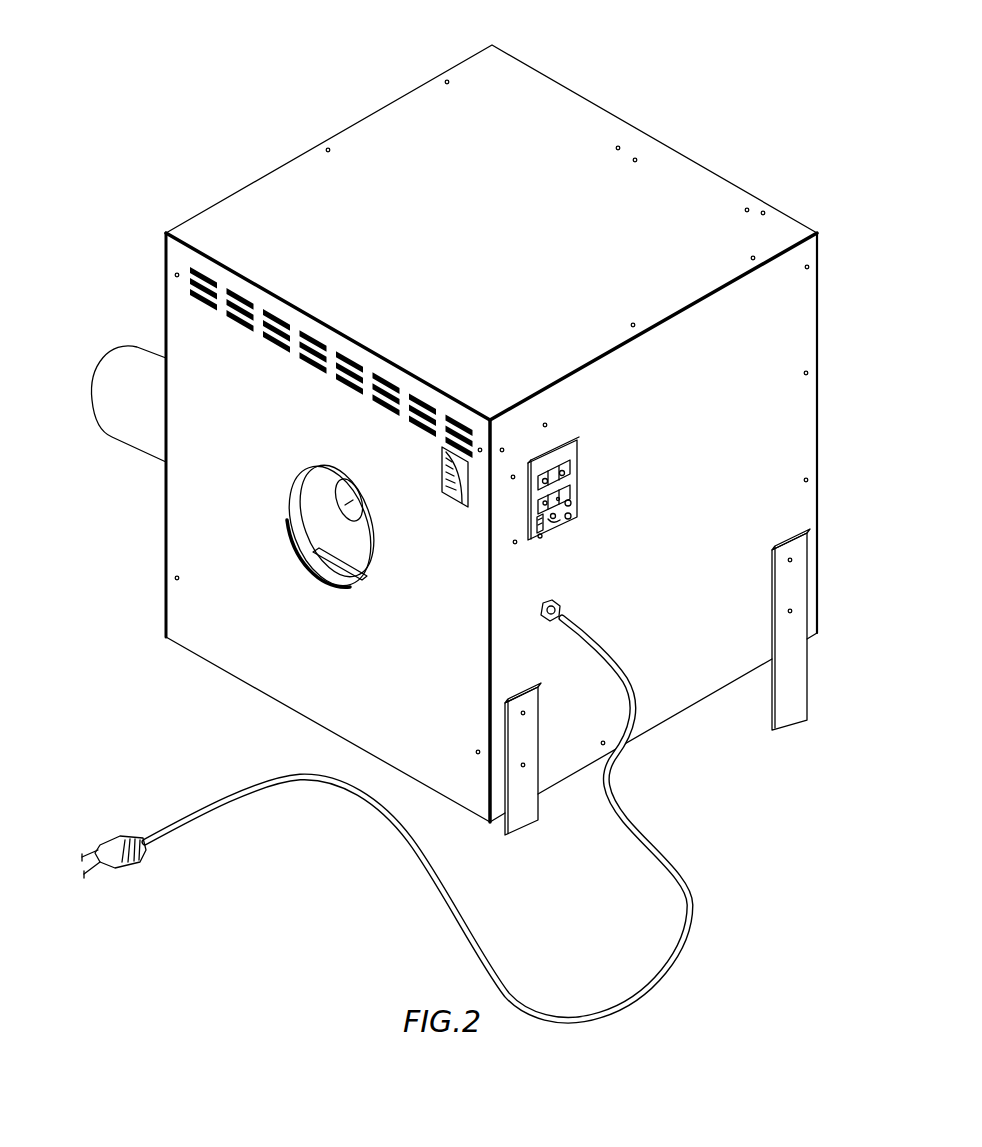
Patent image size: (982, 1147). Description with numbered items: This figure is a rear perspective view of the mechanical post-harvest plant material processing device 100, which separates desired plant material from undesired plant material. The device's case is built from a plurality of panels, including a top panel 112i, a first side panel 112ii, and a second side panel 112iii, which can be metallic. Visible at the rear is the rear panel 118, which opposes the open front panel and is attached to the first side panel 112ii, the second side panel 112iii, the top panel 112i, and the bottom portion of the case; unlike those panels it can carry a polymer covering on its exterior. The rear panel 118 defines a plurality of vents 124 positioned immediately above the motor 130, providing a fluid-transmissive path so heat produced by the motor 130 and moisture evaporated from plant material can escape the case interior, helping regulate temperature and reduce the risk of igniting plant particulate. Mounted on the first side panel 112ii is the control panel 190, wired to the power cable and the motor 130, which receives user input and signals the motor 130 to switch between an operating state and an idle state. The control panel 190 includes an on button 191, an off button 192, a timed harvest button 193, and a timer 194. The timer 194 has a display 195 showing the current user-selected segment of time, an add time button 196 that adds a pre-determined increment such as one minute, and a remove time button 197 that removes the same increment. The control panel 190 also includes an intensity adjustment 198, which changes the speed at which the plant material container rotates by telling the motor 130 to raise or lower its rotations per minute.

The mechanical post-harvest plant material processing device 100 is at (279, 30).
The top panel 112i is at (549, 92).
The first side panel 112ii is at (801, 326).
The second side panel 112iii is at (228, 199).
The rear panel 118 is at (180, 533).
The vents 124 is at (273, 336).
The motor 130 is at (347, 503).
The control panel 190 is at (575, 443).
The on button 191 is at (572, 504).
The off button 192 is at (571, 518).
The timed harvest button 193 is at (554, 520).
The timer 194 is at (569, 462).
The display 195 is at (545, 466).
The add time button 196 is at (564, 474).
The remove time button 197 is at (537, 520).
The intensity adjustment 198 is at (538, 541).